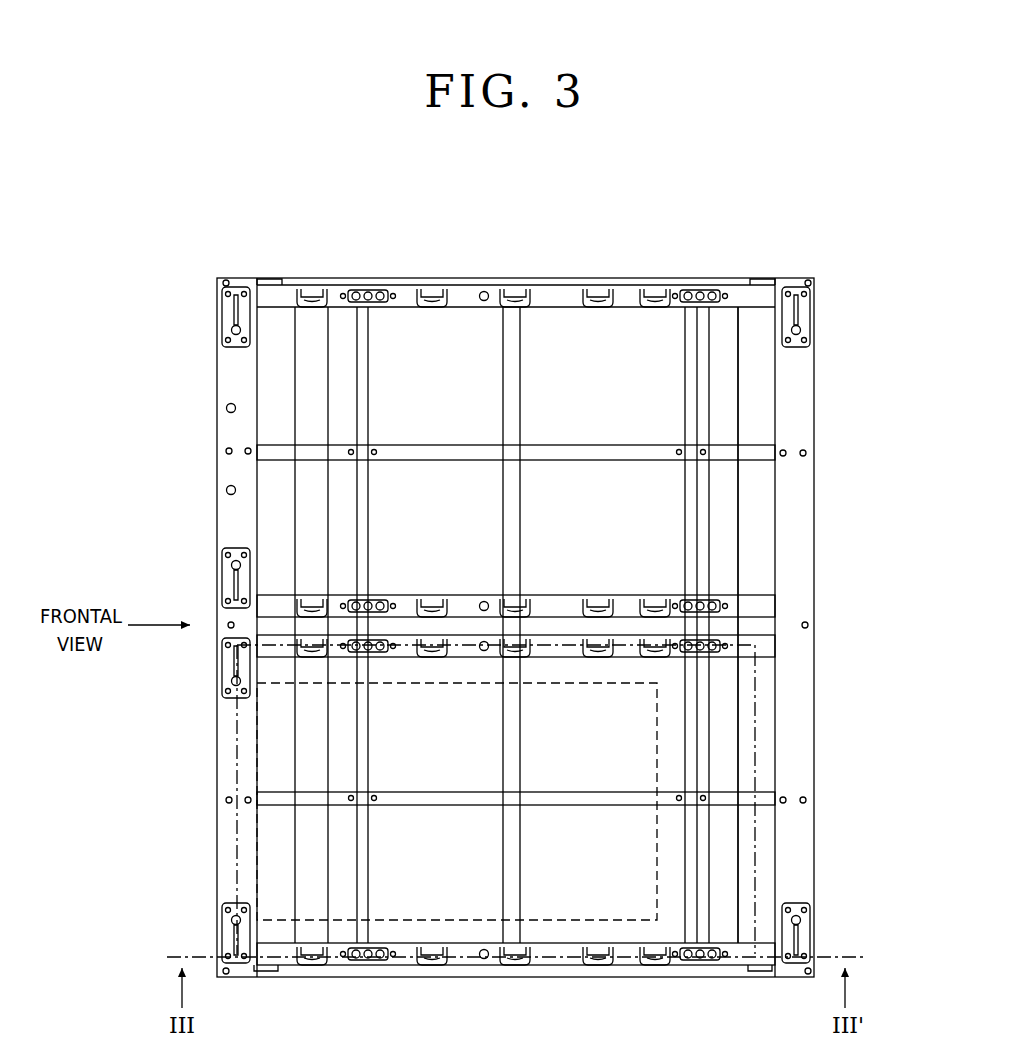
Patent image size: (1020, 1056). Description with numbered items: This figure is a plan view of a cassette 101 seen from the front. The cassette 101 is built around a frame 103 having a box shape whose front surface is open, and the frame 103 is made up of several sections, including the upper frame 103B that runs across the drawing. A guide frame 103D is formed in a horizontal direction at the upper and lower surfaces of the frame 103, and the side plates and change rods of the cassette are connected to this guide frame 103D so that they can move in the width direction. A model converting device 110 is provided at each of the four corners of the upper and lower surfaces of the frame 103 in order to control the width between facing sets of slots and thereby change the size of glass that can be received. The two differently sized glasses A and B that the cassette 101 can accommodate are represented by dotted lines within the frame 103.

The cassette 101 is at (829, 275).
The frame 103 is at (683, 968).
The upper frame 103B is at (512, 858).
The guide frame 103D is at (760, 957).
The model converting device 110 is at (802, 920).
The glass A is at (657, 693).
The glass B is at (755, 765).